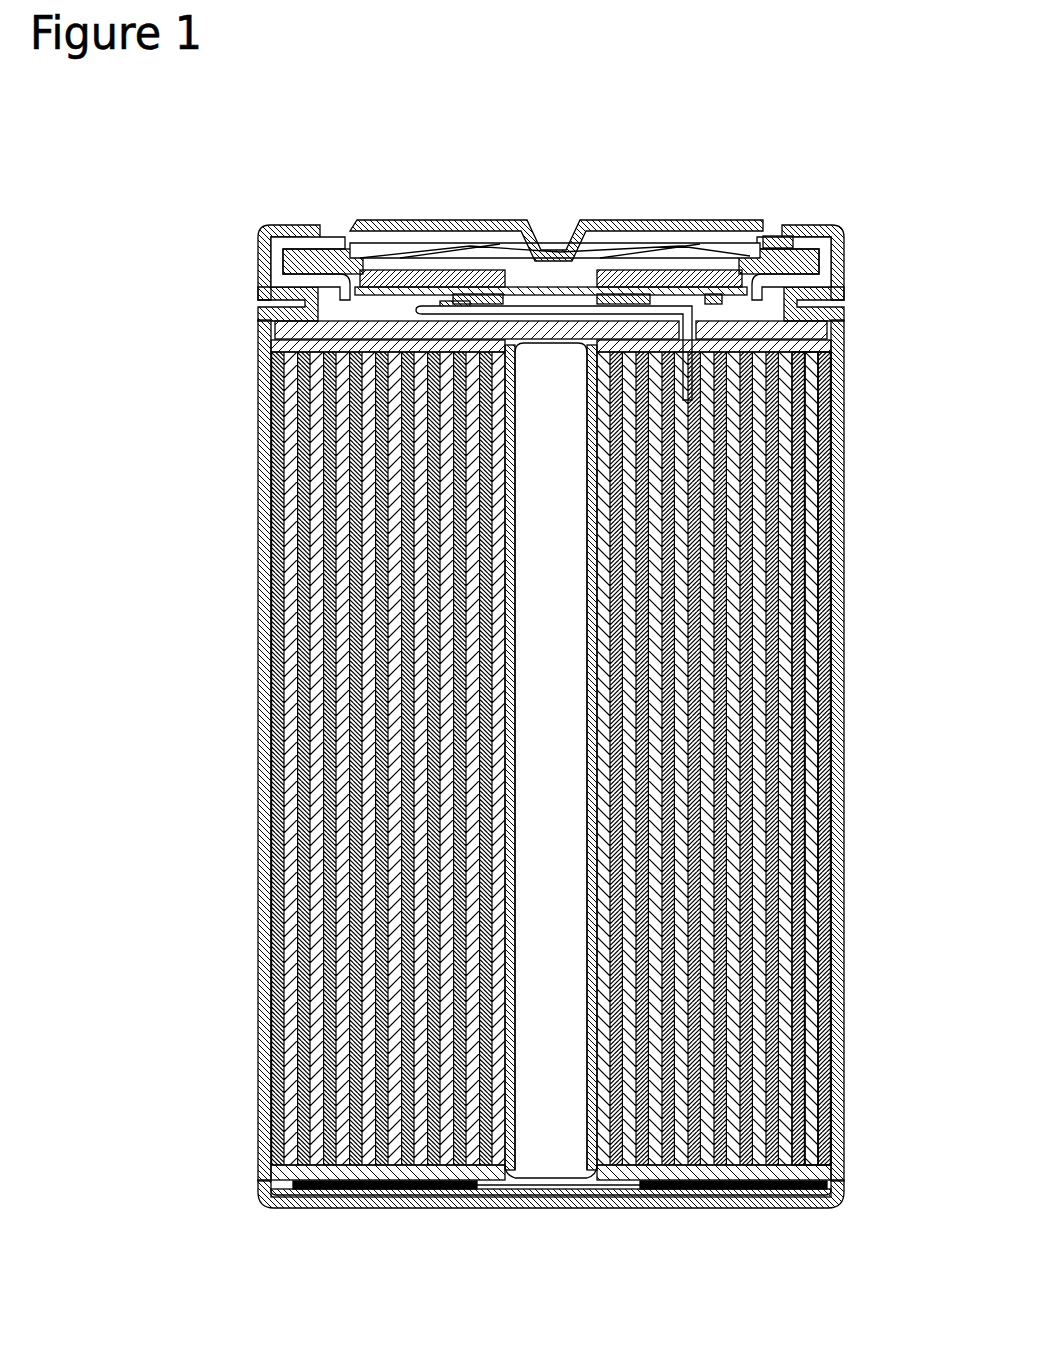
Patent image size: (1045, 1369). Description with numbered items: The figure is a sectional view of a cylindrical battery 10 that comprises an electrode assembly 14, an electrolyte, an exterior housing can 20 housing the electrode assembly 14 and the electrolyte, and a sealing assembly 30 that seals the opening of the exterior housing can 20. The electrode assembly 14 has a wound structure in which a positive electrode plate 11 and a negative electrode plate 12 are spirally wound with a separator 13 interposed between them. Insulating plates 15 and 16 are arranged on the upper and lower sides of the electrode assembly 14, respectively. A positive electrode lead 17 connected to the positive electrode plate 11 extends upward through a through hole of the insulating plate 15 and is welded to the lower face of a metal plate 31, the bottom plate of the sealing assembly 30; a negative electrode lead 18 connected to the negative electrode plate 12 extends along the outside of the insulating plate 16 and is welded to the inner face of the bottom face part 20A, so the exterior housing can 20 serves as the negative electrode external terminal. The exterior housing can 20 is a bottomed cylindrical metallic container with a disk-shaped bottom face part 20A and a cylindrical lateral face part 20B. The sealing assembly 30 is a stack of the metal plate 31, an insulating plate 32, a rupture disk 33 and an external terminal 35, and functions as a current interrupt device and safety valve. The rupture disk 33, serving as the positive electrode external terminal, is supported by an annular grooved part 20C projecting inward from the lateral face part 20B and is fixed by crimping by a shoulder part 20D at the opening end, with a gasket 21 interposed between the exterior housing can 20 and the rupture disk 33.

The cylindrical battery 10 is at (862, 188).
The positive electrode plate 11 is at (818, 638).
The negative electrode plate 12 is at (815, 678).
The separator 13 is at (806, 718).
The electrode assembly 14 is at (905, 620).
The insulating plate 15 is at (280, 327).
The insulating plate 16 is at (846, 1190).
The positive electrode lead 17 is at (515, 221).
The negative electrode lead 18 is at (546, 1210).
The exterior housing can 20 is at (846, 418).
The bottom face part 20A is at (656, 1210).
The lateral face part 20B is at (846, 465).
The grooved part 20C is at (324, 288).
The shoulder part 20D is at (294, 224).
The gasket 21 is at (796, 232).
The sealing assembly 30 is at (708, 208).
The metal plate 31 is at (396, 221).
The insulating plate 32 is at (805, 298).
The rupture disk 33 is at (846, 264).
The external terminal 35 is at (621, 219).